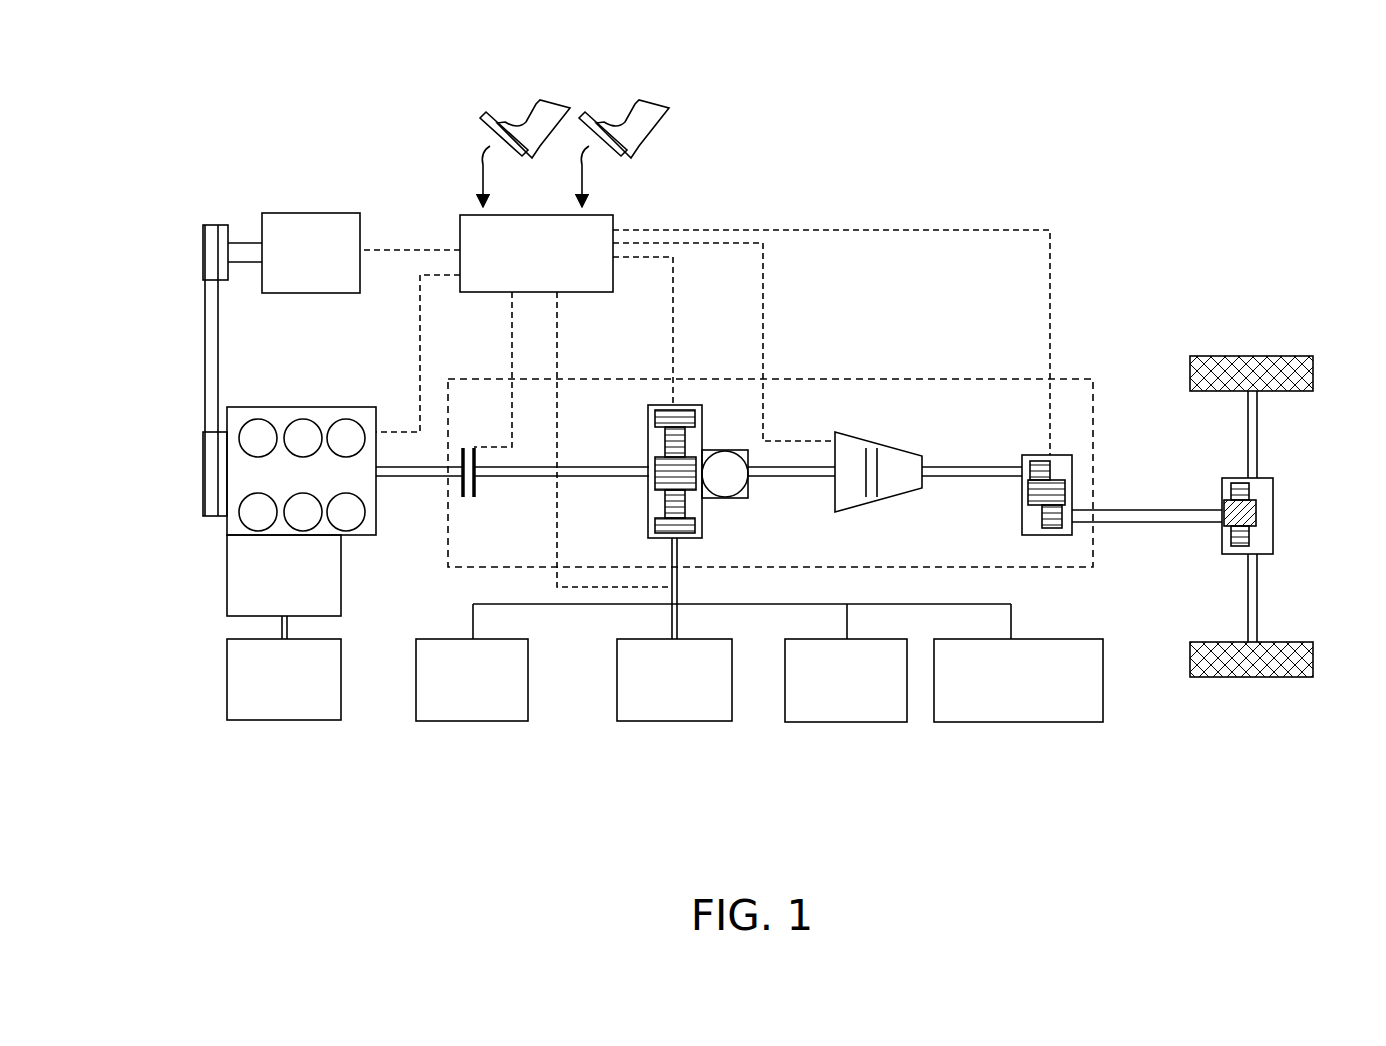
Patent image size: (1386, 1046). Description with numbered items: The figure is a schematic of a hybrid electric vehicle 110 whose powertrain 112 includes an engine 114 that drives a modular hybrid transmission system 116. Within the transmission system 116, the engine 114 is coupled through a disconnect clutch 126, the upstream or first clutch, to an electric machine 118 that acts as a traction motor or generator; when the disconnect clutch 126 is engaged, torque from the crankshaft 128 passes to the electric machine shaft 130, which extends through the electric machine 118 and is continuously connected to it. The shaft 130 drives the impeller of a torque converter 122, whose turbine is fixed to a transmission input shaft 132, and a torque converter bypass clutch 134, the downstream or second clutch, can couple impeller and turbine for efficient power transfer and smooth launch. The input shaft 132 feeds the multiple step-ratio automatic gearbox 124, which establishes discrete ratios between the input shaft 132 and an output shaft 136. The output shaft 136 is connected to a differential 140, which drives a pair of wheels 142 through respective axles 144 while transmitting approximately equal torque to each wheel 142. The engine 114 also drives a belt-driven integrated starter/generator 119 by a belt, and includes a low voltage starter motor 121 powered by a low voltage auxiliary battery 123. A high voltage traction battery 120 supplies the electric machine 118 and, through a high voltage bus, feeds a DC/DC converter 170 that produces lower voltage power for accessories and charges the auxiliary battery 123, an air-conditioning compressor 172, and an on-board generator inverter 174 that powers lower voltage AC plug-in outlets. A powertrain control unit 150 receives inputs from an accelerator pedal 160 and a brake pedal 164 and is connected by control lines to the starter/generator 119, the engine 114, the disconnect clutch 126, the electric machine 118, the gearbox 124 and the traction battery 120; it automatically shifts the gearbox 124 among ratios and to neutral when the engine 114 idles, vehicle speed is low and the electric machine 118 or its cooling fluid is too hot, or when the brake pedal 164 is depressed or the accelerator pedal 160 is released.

The hybrid electric vehicle 110 is at (768, 153).
The powertrain 112 is at (424, 590).
The engine 114 is at (290, 405).
The transmission system 116 is at (840, 378).
The electric machine 118 is at (648, 432).
The belt-driven integrated starter/generator 119 is at (362, 225).
The high voltage traction battery 120 is at (666, 722).
The low voltage starter motor 121 is at (227, 583).
The torque converter 122 is at (897, 447).
The low voltage auxiliary battery 123 is at (282, 722).
The gearbox 124 is at (1022, 497).
The disconnect clutch 126 is at (478, 490).
The crankshaft 128 is at (412, 480).
The electric machine shaft 130 is at (622, 478).
The transmission input shaft 132 is at (973, 465).
The torque converter bypass clutch 134 is at (878, 488).
The output shaft 136 is at (1112, 522).
The differential 140 is at (1275, 517).
The wheels 142 is at (1238, 355).
The axles 144 is at (1247, 430).
The powertrain control unit 150 is at (615, 218).
The accelerator pedal 160 is at (480, 122).
The brake pedal 164 is at (576, 122).
The DC/DC converter 170 is at (466, 722).
The air-conditioning compressor 172 is at (845, 722).
The on-board generator inverter 174 is at (1011, 722).